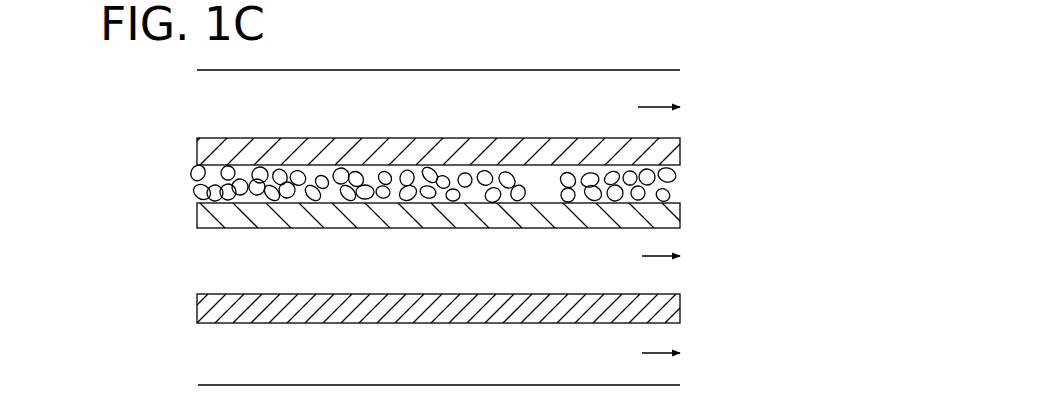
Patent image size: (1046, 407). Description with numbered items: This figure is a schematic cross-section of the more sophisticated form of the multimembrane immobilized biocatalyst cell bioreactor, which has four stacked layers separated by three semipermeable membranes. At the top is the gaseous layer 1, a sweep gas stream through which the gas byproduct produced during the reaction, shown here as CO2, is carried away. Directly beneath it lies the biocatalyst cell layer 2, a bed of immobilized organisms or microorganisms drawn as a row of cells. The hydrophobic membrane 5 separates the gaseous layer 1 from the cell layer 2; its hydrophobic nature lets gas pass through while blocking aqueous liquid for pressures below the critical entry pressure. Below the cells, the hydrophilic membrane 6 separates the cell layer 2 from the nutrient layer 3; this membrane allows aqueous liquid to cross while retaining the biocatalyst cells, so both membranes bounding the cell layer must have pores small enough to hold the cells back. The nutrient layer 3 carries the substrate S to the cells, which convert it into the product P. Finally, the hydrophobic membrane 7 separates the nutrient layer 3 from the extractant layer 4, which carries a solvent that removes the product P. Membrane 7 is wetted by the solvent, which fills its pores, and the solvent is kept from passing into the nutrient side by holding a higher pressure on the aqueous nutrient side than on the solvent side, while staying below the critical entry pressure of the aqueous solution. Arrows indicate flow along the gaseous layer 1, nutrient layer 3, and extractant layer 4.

The gaseous layer 1 is at (421, 93).
The biocatalyst cell layer 2 is at (192, 184).
The nutrient layer 3 is at (419, 263).
The extractant layer 4 is at (418, 364).
The hydrophobic membrane 5 is at (685, 153).
The hydrophilic membrane 6 is at (685, 215).
The hydrophobic membrane 7 is at (685, 308).
The substrate S is at (482, 230).
The product P is at (535, 247).
The carbon dioxide CO2 is at (612, 177).